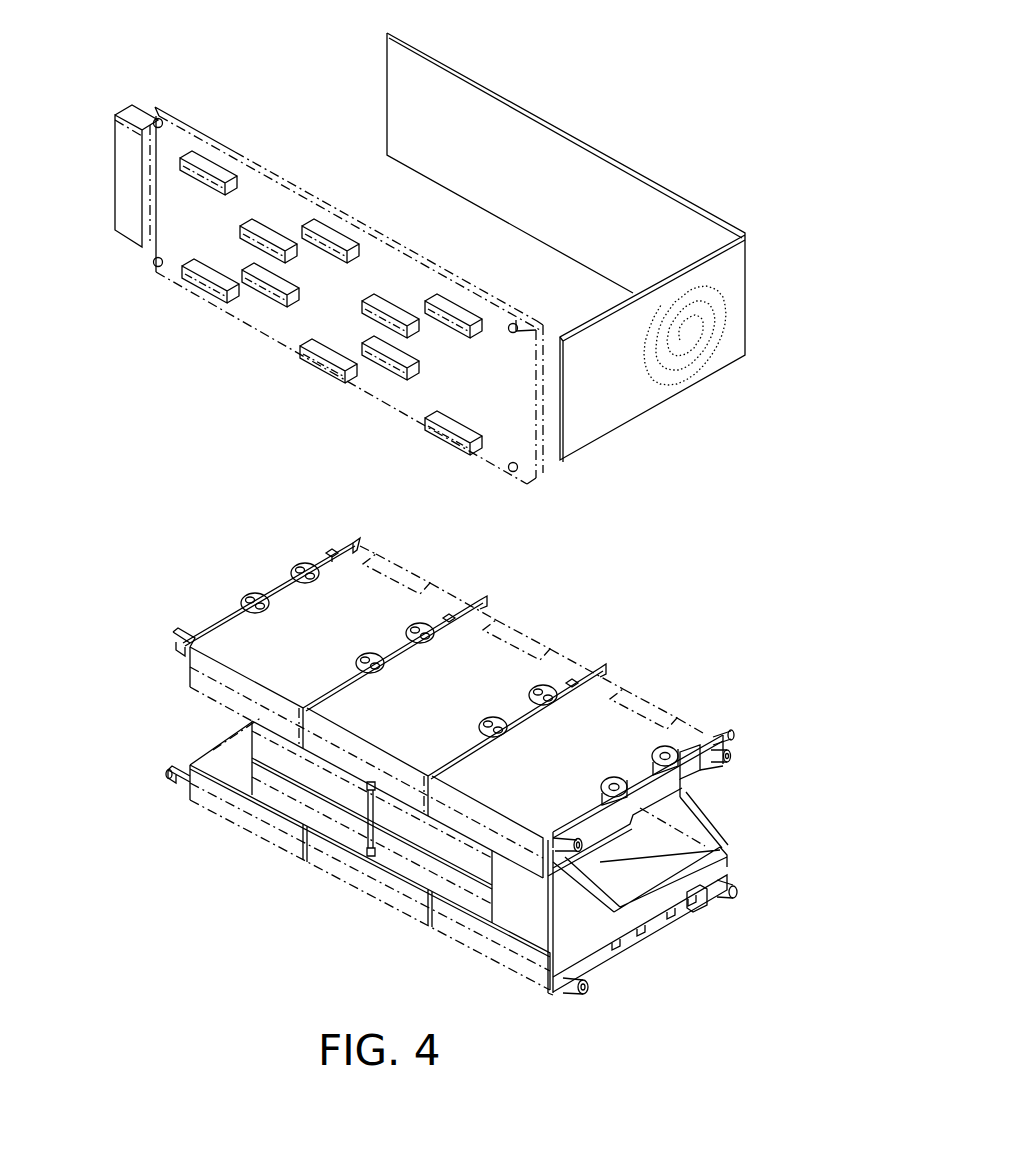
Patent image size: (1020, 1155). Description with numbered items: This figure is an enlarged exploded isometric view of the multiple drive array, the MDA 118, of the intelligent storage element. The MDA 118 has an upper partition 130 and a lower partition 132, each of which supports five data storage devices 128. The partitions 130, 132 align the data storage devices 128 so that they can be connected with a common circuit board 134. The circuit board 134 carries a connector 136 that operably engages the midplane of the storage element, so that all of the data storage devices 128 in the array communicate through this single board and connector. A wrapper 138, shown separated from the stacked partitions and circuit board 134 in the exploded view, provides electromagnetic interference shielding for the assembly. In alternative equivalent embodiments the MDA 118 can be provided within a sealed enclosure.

The MDA 118 is at (634, 28).
The data storage devices 128 is at (282, 604).
The upper partition 130 is at (706, 784).
The lower partition 132 is at (727, 853).
The circuit board 134 is at (165, 110).
The connector 136 is at (130, 105).
The wrapper 138 is at (440, 62).